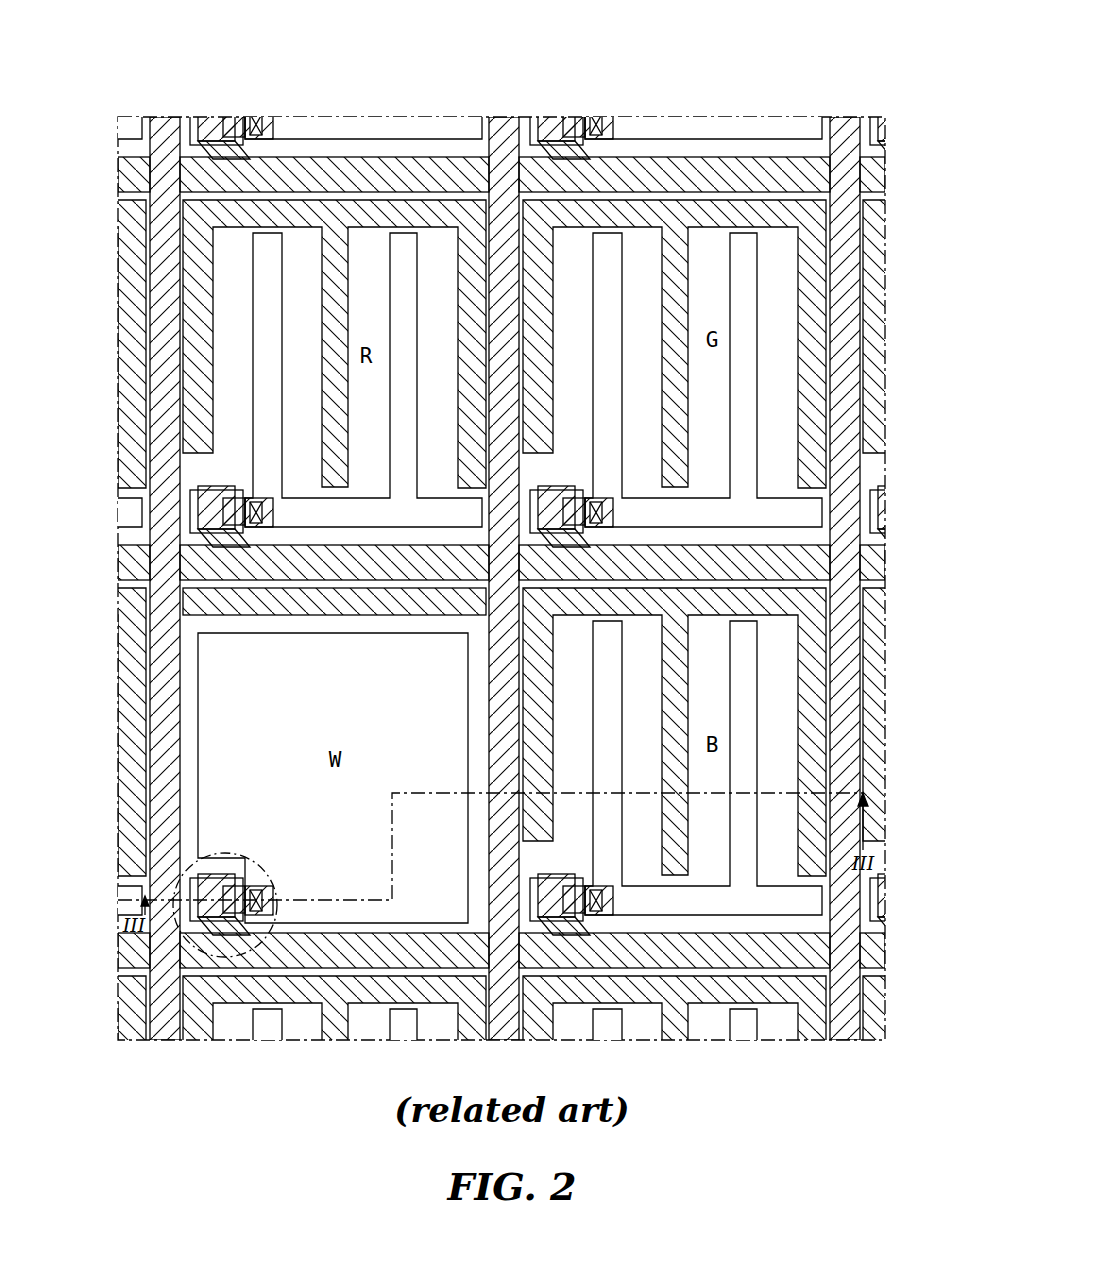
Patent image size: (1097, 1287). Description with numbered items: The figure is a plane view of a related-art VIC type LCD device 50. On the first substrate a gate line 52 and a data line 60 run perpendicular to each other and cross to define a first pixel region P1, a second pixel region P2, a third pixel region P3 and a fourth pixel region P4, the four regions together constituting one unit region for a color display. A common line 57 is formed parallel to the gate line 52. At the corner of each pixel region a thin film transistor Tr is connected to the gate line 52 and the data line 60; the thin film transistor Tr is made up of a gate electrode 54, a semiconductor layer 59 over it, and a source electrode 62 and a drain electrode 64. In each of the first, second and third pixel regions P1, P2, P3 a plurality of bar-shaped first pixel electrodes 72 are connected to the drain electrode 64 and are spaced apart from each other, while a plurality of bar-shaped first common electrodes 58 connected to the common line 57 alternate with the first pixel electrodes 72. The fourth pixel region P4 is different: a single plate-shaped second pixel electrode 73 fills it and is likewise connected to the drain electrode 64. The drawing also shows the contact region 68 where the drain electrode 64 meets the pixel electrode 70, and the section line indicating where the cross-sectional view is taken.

The VIC type LCD device 50 is at (812, 82).
The gate line 52 is at (372, 565).
The gate electrode 54 is at (206, 535).
The common line 57 is at (875, 218).
The first common electrodes 58 is at (187, 290).
The semiconductor layer 59 is at (232, 537).
The data line 60 is at (165, 333).
The source electrode 62 is at (192, 500).
The drain electrode 64 is at (240, 492).
The drain contact hole 68 is at (260, 490).
The pixel electrode 70 is at (548, 643).
The first pixel electrodes 72 is at (262, 240).
The second pixel electrode 73 is at (198, 746).
The first pixel region P1 is at (437, 256).
The second pixel region P2 is at (642, 256).
The third pixel region P3 is at (782, 720).
The fourth pixel region P4 is at (210, 720).
The thin film transistor Tr is at (238, 858).